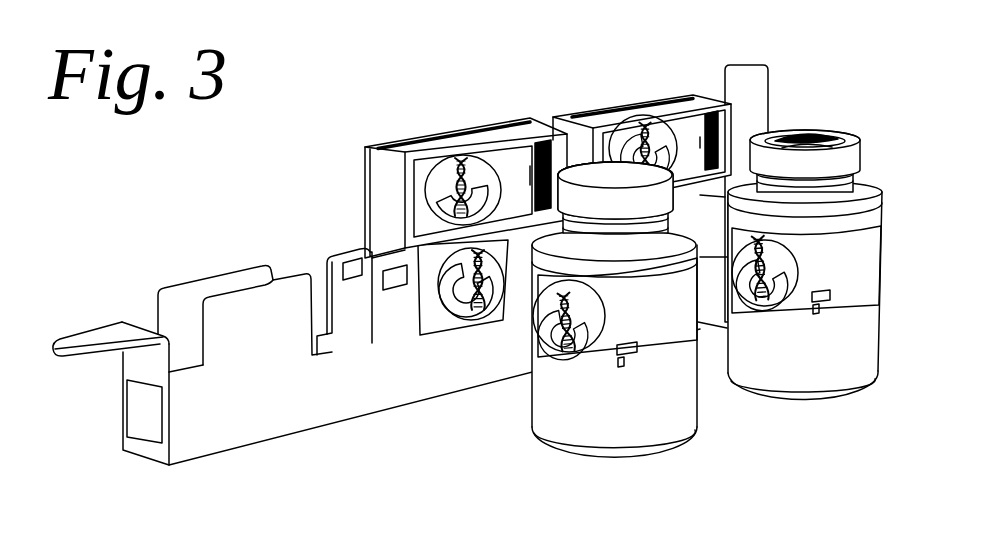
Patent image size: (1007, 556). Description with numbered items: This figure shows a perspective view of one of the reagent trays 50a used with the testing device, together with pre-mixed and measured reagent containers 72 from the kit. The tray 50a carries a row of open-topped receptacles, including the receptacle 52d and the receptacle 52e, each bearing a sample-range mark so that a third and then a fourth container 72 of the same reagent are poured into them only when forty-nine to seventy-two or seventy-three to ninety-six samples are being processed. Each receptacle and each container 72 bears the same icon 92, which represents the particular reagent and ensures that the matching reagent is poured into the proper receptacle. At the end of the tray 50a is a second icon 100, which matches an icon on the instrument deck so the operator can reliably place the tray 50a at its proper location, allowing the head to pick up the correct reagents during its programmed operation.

The tray 50a is at (313, 405).
The icon 100 is at (138, 391).
The receptacle 52d is at (407, 138).
The receptacle 52e is at (592, 110).
The container 72 is at (572, 429).
The icon 92 is at (488, 170).